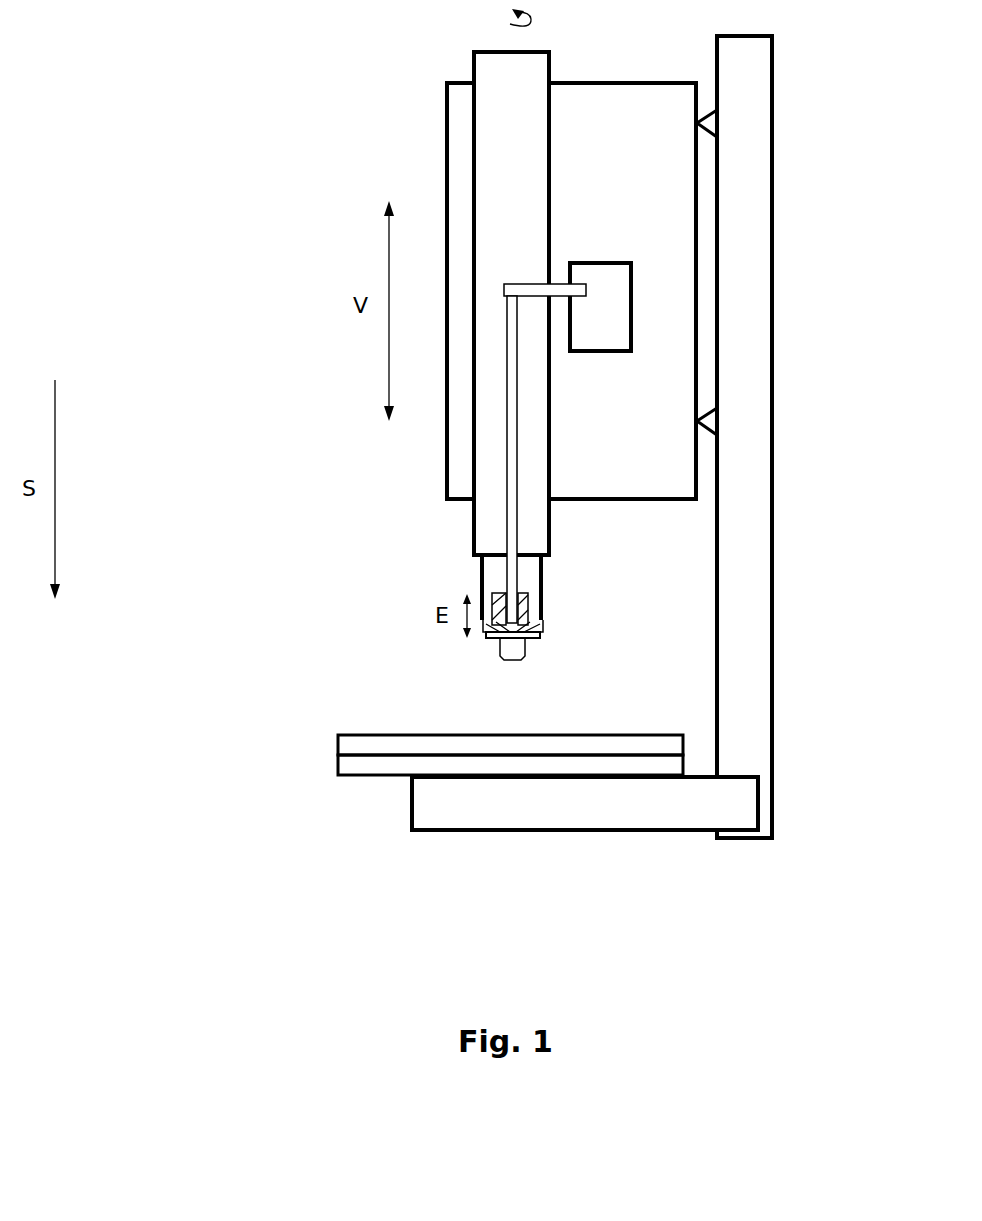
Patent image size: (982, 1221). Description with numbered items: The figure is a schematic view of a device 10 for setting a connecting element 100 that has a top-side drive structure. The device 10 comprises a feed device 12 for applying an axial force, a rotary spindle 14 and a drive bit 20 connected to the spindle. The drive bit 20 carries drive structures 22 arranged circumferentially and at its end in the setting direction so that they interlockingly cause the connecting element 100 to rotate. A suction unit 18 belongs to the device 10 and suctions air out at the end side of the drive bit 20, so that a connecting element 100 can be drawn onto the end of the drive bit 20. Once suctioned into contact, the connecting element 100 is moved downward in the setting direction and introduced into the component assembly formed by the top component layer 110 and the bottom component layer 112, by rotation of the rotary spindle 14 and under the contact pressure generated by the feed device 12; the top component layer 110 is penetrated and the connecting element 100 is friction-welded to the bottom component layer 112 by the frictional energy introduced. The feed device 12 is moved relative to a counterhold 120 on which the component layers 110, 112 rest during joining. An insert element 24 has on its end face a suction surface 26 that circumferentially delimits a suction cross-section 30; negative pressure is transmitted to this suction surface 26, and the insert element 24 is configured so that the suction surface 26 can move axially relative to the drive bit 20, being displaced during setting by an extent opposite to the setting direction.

The device 10 is at (196, 267).
The feed device 12 is at (460, 480).
The rotary spindle 14 is at (513, 100).
The suction unit 18 is at (617, 298).
The drive bit 20 is at (482, 590).
The drive structures 22 is at (484, 620).
The insert element 24 is at (522, 600).
The suction surface 26 is at (527, 630).
The suction cross-section 30 is at (527, 612).
The connecting element 100 is at (507, 657).
The top component layer 110 is at (337, 745).
The bottom component layer 112 is at (337, 765).
The counterhold 120 is at (485, 806).